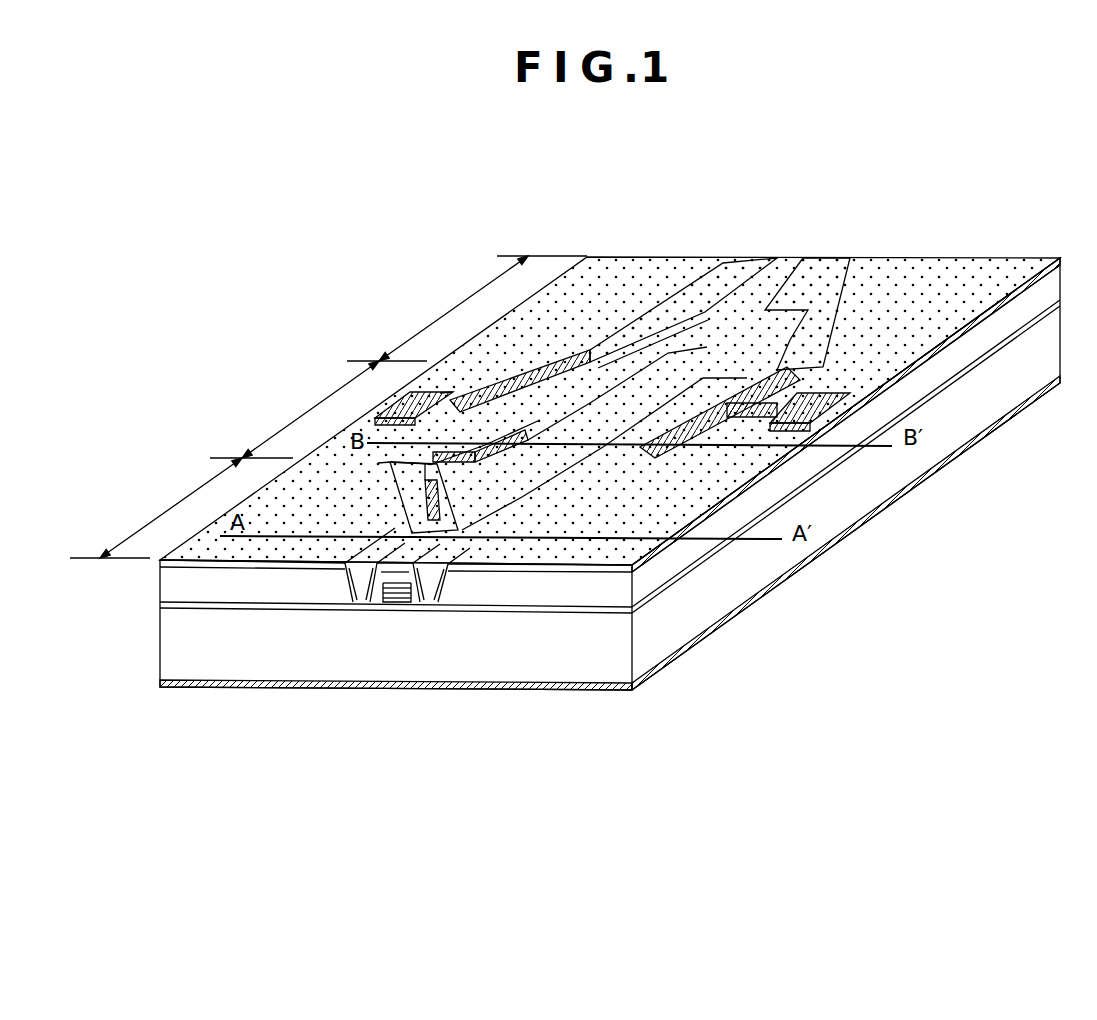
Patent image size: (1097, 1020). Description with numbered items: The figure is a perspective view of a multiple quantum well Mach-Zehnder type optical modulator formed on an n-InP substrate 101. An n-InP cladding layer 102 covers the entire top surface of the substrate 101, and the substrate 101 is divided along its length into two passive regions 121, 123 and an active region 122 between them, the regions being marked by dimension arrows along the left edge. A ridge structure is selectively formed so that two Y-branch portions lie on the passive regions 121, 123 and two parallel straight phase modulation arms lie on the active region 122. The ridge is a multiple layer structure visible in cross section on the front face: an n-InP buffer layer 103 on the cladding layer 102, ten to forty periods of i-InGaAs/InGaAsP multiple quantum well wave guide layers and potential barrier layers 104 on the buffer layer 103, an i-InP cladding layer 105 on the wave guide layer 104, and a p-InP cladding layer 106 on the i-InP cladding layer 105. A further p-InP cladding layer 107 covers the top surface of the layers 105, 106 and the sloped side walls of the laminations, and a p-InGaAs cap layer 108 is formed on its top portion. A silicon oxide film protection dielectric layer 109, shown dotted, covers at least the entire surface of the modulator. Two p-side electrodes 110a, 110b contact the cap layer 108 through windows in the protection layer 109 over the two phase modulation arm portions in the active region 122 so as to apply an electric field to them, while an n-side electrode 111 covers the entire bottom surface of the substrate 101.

The n-InP substrate 101 is at (573, 664).
The n-InP cladding layer 102 is at (487, 612).
The n-InP buffer layer 103 is at (420, 604).
The multiple quantum well wave guide layers/potential barrier layers 104 is at (412, 604).
The i-InP cladding layer 105 is at (403, 604).
The p-InP cladding layer 106 is at (392, 604).
The p-InP cladding layer 107 is at (377, 604).
The p-InGaAs cap layer 108 is at (350, 604).
The silicon oxide film protection dielectric layer 109 is at (597, 297).
The p-side electrode 110a is at (738, 258).
The p-side electrode 110b is at (742, 372).
The n-side electrode 111 is at (780, 587).
The passive region 121 is at (156, 508).
The active region 122 is at (294, 409).
The passive region 123 is at (467, 308).